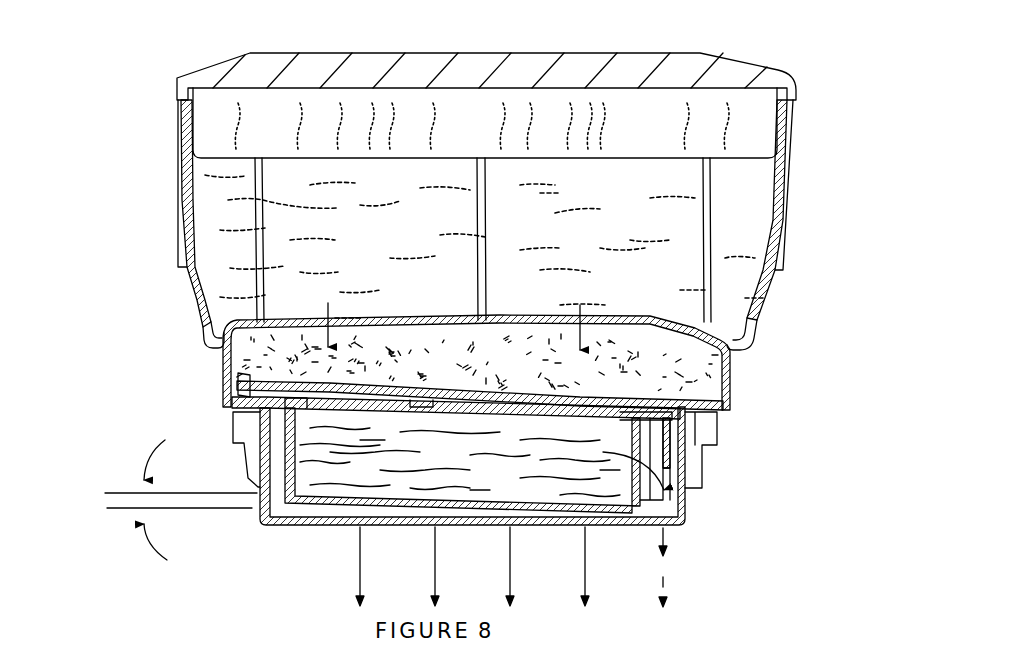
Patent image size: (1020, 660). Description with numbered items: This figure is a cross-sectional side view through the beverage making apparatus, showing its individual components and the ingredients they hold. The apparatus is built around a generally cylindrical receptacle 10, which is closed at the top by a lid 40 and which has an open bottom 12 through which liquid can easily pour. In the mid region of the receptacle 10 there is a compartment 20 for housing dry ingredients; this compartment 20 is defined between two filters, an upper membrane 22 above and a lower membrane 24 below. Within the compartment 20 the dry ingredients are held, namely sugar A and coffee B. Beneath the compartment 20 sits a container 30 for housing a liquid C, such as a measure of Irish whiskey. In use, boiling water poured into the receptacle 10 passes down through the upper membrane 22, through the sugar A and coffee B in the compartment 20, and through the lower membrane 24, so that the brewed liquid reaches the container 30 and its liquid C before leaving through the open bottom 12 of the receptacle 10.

The lid 40 is at (703, 53).
The receptacle 10 is at (763, 222).
The upper membrane 22 is at (322, 308).
The sugar A is at (540, 363).
The compartment 20 is at (642, 363).
The lower membrane 24 is at (315, 380).
The coffee B is at (540, 375).
The container 30 is at (668, 504).
The open bottom 12 is at (347, 533).
The liquid C is at (413, 468).